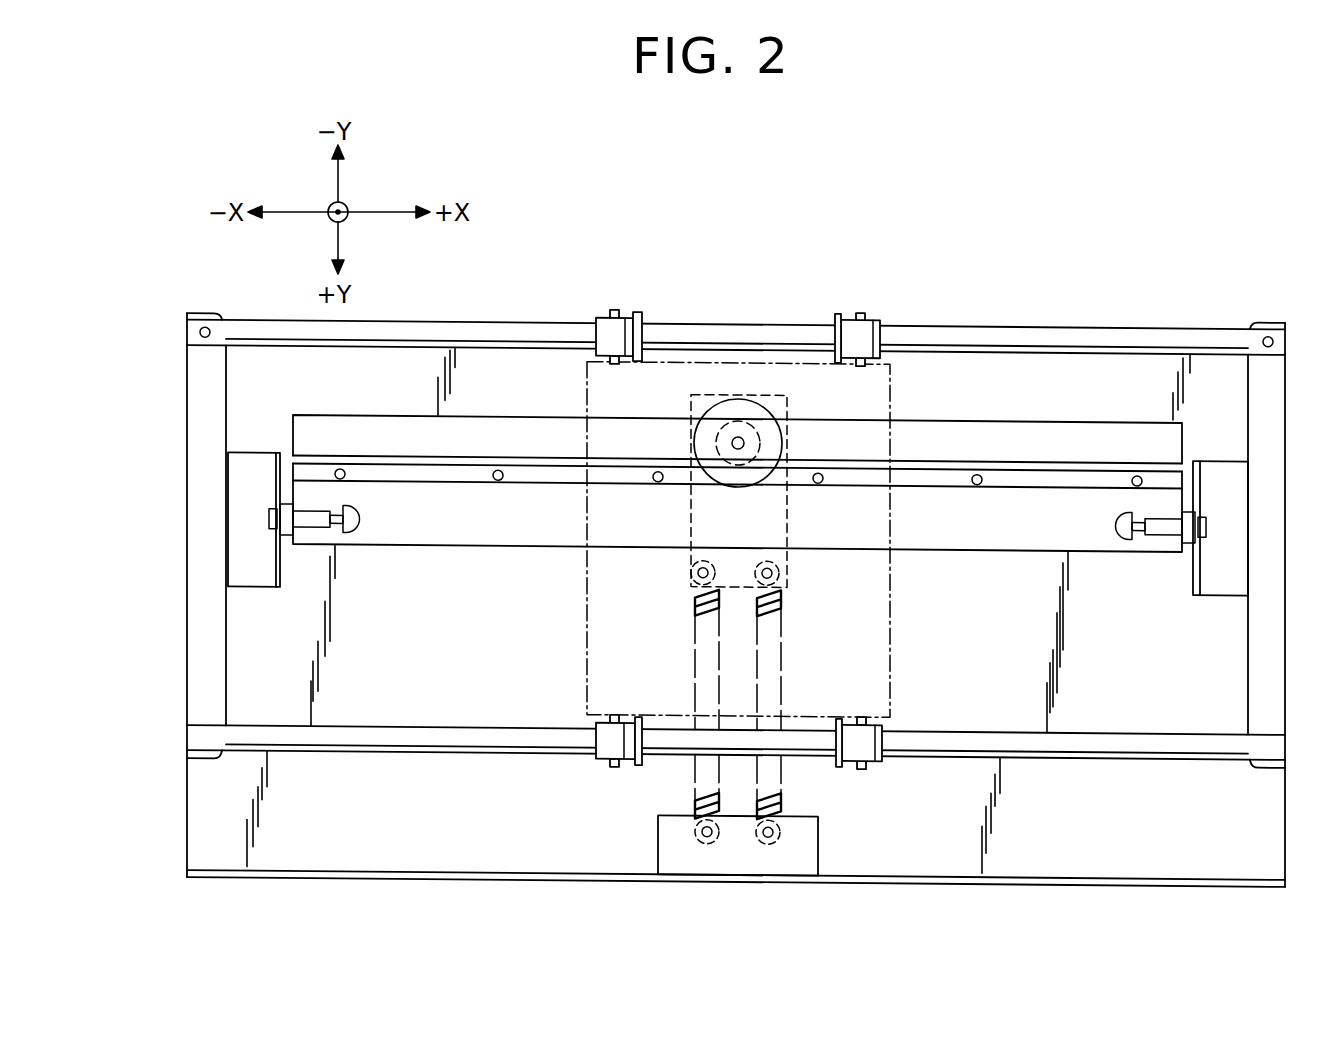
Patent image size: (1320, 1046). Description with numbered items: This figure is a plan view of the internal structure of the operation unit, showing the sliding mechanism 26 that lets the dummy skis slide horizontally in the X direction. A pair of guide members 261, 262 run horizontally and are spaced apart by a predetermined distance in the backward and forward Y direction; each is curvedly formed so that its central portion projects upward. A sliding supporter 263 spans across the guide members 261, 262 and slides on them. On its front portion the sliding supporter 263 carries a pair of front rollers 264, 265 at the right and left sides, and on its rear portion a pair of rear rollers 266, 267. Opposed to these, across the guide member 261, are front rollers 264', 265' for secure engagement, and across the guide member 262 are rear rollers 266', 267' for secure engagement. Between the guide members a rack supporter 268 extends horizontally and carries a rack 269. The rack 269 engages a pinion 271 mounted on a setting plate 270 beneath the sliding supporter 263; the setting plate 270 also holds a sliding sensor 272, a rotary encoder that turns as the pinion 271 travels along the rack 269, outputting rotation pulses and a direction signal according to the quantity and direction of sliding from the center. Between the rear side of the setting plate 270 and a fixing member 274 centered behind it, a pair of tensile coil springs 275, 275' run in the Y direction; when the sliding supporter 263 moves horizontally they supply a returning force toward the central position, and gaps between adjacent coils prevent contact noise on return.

The sliding mechanism 26 is at (507, 542).
The guide member 261 is at (362, 339).
The guide member 262 is at (363, 743).
The sliding supporter 263 is at (890, 579).
The front roller 264 is at (610, 300).
The front roller for secure engagement 264' is at (681, 326).
The front roller 265 is at (868, 302).
The front roller for secure engagement 265' is at (798, 327).
The rear roller 266 is at (585, 769).
The rear roller for secure engagement 266' is at (626, 784).
The rear roller 267 is at (890, 772).
The rear roller for secure engagement 267' is at (860, 785).
The rack supporter 268 is at (1003, 443).
The rack 269 is at (1125, 461).
The setting plate 270 is at (790, 528).
The pinion 271 is at (765, 448).
The sliding sensor 272 is at (688, 434).
The fixing member 274 is at (775, 878).
The tensile coil spring 275 is at (662, 702).
The tensile coil spring 275' is at (814, 703).